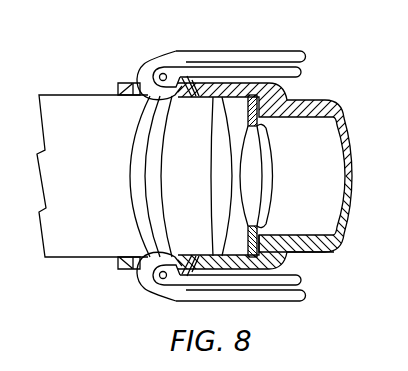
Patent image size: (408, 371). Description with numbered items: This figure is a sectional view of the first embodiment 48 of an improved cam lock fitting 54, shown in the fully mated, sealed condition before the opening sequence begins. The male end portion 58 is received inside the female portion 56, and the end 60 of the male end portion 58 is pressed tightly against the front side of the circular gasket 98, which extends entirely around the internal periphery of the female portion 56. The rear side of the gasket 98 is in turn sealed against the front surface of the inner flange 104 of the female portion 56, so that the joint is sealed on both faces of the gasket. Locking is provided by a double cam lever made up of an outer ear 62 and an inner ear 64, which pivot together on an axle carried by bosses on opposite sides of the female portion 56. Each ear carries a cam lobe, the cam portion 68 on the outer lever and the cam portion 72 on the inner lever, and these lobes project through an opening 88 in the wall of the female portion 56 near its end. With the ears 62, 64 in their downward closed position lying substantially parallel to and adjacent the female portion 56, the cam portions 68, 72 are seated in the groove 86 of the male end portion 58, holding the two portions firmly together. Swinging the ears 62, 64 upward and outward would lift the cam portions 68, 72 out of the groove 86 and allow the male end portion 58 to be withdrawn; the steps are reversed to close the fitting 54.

The double cam lever 48 is at (252, 160).
The cam lock fitting 54 is at (204, 146).
The female portion 56 is at (319, 100).
The male end portion 58 is at (66, 243).
The end of male end portion 60 is at (234, 152).
The outer ear 62 is at (232, 56).
The inner ear 64 is at (268, 73).
The cam portion 68 is at (144, 64).
The cam portion 72 is at (174, 68).
The groove 86 is at (150, 161).
The opening 88 is at (133, 84).
The gasket 98 is at (246, 252).
The inner flange 104 is at (284, 243).